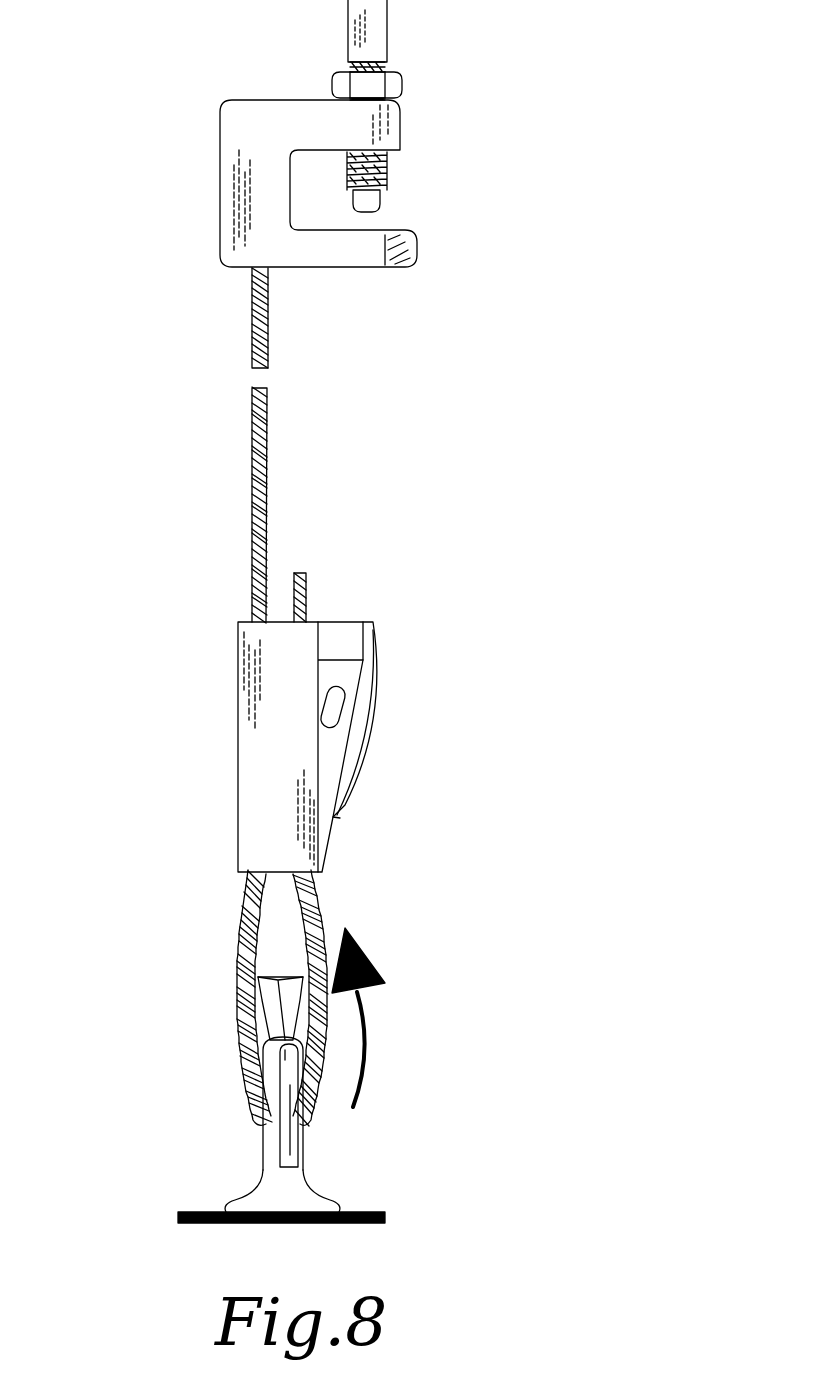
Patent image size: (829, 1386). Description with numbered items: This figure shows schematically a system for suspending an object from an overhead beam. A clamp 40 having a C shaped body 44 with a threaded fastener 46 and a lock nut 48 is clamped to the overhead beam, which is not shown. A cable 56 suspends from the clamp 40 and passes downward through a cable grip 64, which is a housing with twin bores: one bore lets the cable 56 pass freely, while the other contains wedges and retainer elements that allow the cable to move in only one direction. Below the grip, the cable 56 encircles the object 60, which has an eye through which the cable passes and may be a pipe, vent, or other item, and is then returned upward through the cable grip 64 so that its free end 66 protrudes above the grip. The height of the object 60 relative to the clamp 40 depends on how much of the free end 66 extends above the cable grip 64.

The clamp 40 is at (160, 228).
The C shaped body 44 is at (247, 127).
The threaded fastener 46 is at (367, 50).
The lock nut 48 is at (403, 82).
The cable 56 is at (263, 517).
The object 60 is at (303, 1188).
The cable grip 64 is at (258, 770).
The free end 66 is at (307, 575).